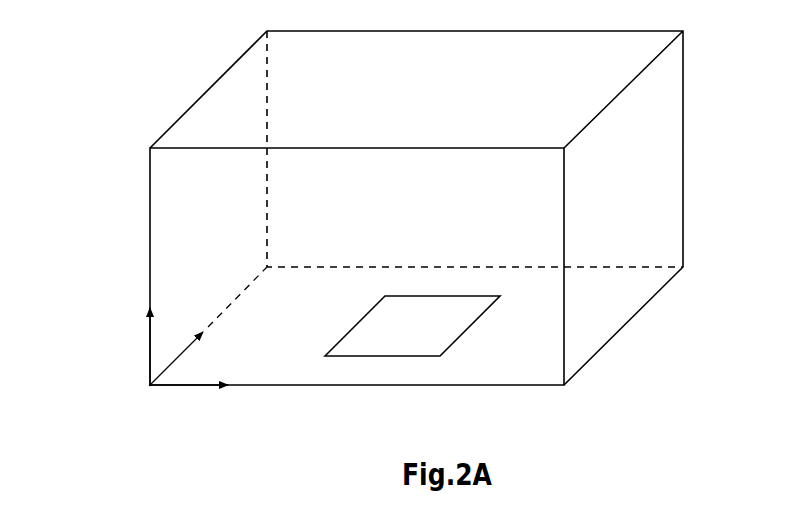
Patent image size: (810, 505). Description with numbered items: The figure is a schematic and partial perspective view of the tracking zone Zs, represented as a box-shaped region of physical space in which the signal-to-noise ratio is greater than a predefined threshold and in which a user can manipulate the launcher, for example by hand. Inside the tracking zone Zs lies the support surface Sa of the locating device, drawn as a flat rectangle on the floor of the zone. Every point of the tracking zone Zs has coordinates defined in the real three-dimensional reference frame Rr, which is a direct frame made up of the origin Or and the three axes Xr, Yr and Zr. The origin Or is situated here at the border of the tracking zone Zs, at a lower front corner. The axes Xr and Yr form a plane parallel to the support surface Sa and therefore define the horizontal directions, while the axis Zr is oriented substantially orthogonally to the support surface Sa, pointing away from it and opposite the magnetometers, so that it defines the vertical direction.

The tracking zone Zs is at (684, 148).
The support surface Sa is at (412, 326).
The real three-dimensional reference frame Rr is at (142, 344).
The origin Or is at (137, 396).
The axis Xr is at (189, 403).
The axis Yr is at (208, 326).
The axis Zr is at (132, 346).